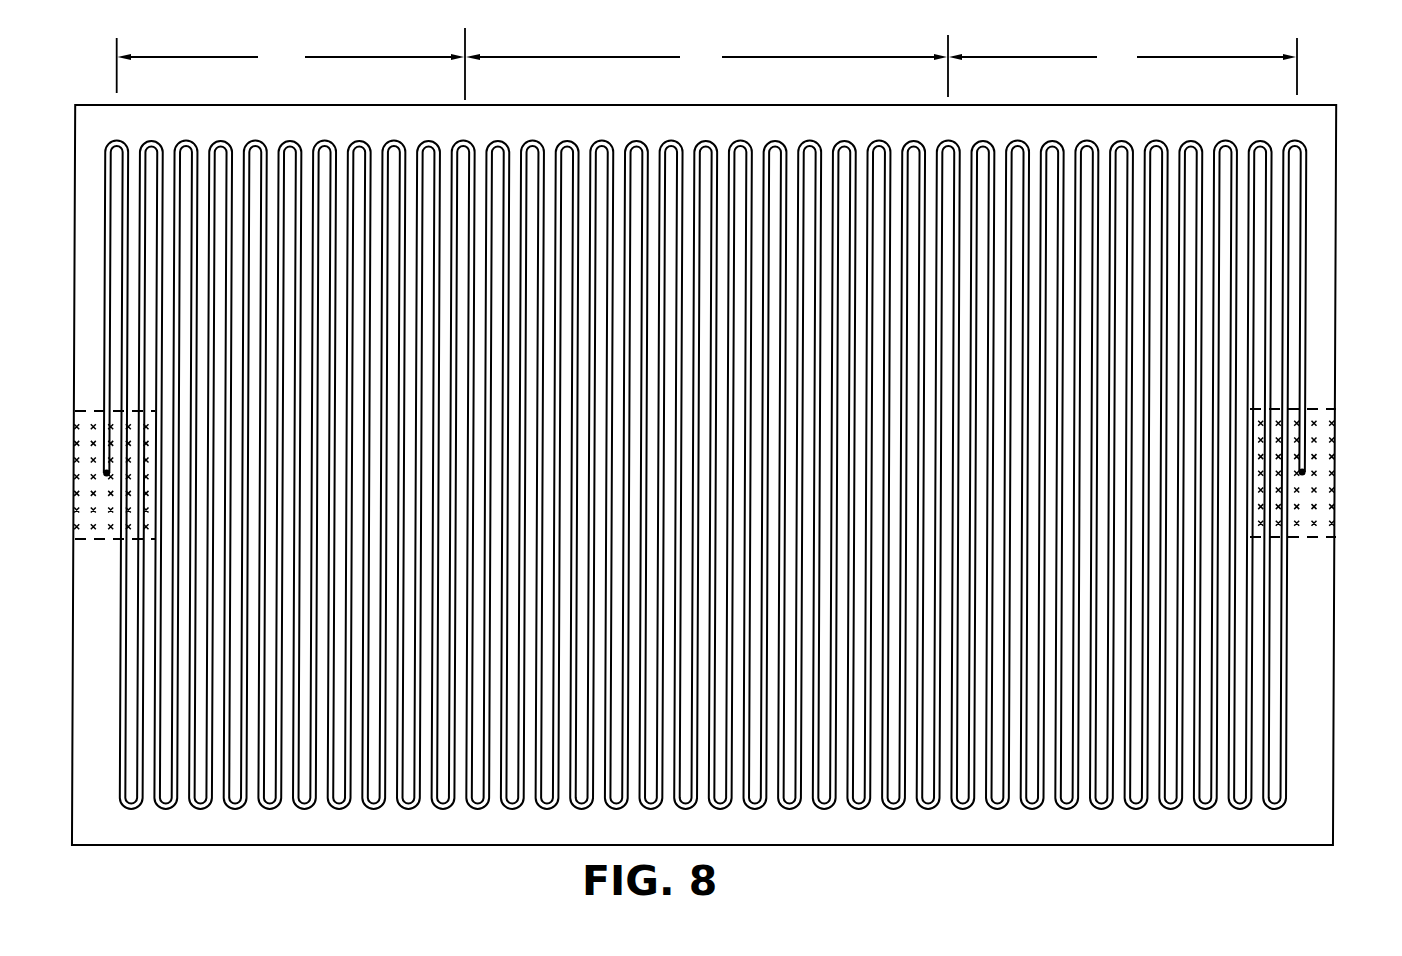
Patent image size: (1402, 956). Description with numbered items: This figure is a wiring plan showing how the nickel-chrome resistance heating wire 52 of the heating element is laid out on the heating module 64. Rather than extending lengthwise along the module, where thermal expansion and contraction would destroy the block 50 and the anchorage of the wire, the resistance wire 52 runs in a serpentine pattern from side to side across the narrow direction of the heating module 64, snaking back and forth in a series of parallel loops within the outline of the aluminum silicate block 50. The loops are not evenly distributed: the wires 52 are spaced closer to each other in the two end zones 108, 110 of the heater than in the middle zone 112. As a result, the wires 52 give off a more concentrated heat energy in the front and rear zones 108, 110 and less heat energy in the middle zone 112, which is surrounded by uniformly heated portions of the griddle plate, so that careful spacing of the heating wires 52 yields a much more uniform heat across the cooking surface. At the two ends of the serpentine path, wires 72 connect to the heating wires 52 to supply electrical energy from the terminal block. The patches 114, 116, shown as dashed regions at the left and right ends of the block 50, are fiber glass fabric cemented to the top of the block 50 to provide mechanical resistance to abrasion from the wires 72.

The block 50 is at (1316, 714).
The resistance heating wire 52 is at (1318, 374).
The heating module 64 is at (711, 475).
The wires 72 is at (104, 475).
The end zone 108 is at (262, 73).
The end zone 110 is at (1102, 73).
The middle zone 112 is at (685, 71).
The patch 114 is at (82, 437).
The patch 116 is at (1322, 419).